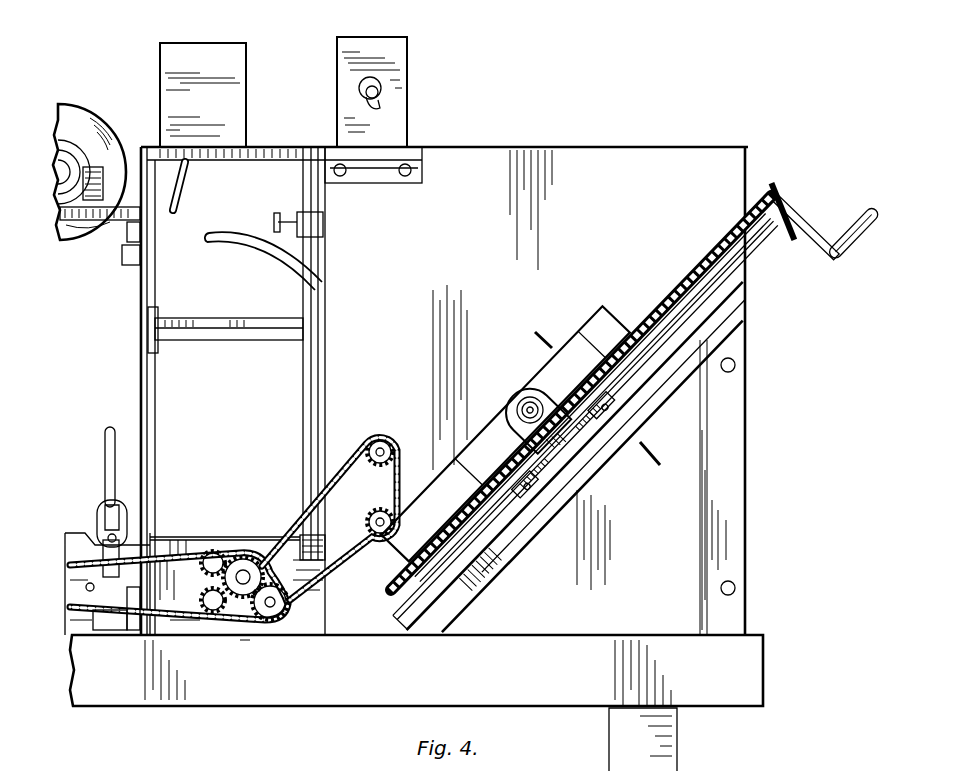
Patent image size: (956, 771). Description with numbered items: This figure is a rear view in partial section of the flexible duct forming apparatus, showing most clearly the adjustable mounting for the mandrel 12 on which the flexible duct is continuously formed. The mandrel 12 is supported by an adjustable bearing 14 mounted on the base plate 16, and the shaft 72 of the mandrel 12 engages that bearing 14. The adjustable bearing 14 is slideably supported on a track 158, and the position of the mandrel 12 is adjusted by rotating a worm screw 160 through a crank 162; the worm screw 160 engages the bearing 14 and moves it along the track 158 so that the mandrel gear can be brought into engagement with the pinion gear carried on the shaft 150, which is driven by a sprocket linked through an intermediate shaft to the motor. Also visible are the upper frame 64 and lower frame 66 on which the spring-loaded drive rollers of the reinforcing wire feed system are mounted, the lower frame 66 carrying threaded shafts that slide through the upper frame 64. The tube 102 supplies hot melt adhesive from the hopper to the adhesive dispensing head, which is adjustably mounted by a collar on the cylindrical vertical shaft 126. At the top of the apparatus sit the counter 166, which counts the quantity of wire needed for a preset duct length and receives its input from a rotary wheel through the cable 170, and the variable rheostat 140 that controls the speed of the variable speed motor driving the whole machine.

The mandrel 12 is at (558, 326).
The adjustable bearing 14 is at (508, 401).
The base plate 16 is at (602, 158).
The upper frame 64 is at (190, 545).
The lower frame 66 is at (190, 620).
The shaft 72 is at (530, 397).
The tube 102 is at (258, 258).
The vertical shaft 126 is at (303, 398).
The variable rheostat 140 is at (378, 38).
The shaft 150 is at (388, 433).
The track 158 is at (570, 458).
The worm screw 160 is at (690, 273).
The crank 162 is at (813, 230).
The counter 166 is at (202, 40).
The cable 170 is at (182, 192).